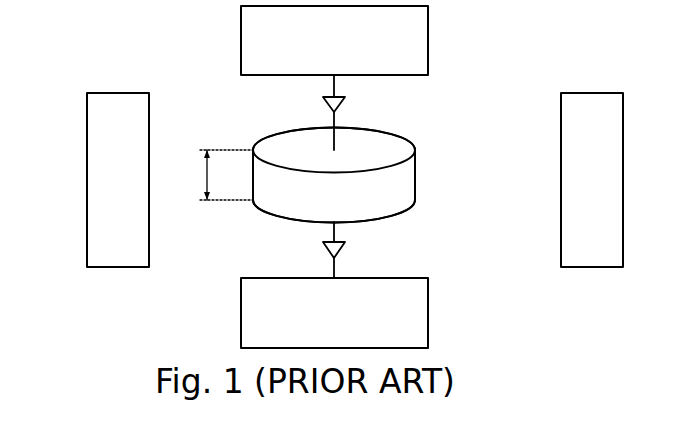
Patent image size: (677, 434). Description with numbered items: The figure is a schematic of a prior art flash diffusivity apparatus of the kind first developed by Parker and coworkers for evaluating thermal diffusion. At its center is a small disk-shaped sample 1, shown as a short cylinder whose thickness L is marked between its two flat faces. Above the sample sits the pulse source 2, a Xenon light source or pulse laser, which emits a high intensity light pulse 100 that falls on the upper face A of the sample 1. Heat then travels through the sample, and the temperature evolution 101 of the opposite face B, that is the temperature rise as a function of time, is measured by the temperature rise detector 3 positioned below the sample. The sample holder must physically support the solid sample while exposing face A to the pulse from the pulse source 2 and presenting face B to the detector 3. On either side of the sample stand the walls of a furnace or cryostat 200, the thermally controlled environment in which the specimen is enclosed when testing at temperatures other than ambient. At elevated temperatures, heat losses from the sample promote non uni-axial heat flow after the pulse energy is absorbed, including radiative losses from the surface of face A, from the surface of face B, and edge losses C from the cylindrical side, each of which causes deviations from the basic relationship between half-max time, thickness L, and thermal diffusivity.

The disk-shaped sample 1 is at (277, 147).
The pulse source 2 is at (394, 48).
The temperature rise detector 3 is at (241, 317).
The high intensity light pulse 100 is at (344, 104).
The temperature evolution 101 is at (327, 251).
The furnace or cryostat 200 is at (118, 115).
The face A is at (387, 125).
The face B is at (387, 236).
The edge losses C is at (417, 176).
The thickness of the sample L is at (217, 175).